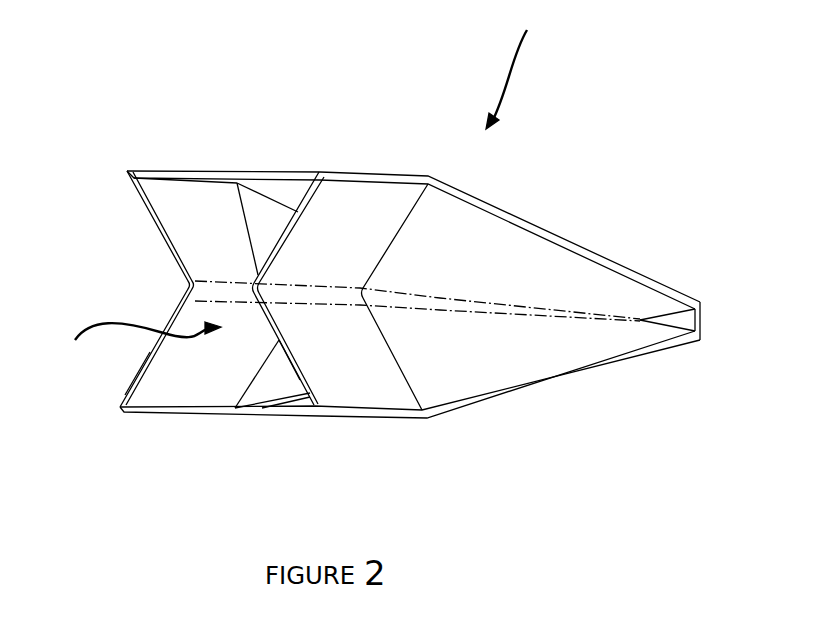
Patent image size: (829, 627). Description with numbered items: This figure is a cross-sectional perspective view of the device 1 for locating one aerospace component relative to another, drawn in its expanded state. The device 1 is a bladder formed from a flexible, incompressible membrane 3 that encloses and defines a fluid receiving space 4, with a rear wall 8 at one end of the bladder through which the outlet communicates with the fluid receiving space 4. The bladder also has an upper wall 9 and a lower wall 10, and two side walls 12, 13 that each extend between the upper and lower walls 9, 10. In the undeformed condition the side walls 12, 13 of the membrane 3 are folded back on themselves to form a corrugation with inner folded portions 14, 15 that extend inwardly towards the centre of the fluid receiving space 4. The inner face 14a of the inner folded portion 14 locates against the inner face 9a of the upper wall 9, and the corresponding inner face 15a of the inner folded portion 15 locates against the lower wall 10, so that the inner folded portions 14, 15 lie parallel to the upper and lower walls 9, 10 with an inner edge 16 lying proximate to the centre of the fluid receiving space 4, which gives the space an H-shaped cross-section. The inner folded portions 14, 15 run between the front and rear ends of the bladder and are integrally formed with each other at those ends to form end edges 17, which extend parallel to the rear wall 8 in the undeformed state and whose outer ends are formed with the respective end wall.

The device 1 is at (519, 73).
The membrane 3 is at (208, 343).
The fluid receiving space 4 is at (131, 338).
The rear wall 8 is at (702, 319).
The upper wall 9 is at (237, 183).
The inner face of upper wall 9a is at (287, 180).
The lower wall 10 is at (242, 414).
The side wall 12 is at (188, 242).
The side wall 13 is at (345, 373).
The inner folded portion 14 is at (152, 216).
The inner face of inner folded portion 14a is at (181, 200).
The inner folded portion 15 is at (142, 378).
The inner face of inner folded portion 15a is at (206, 385).
The inner edge 16 is at (203, 288).
The end edge 17 is at (675, 318).